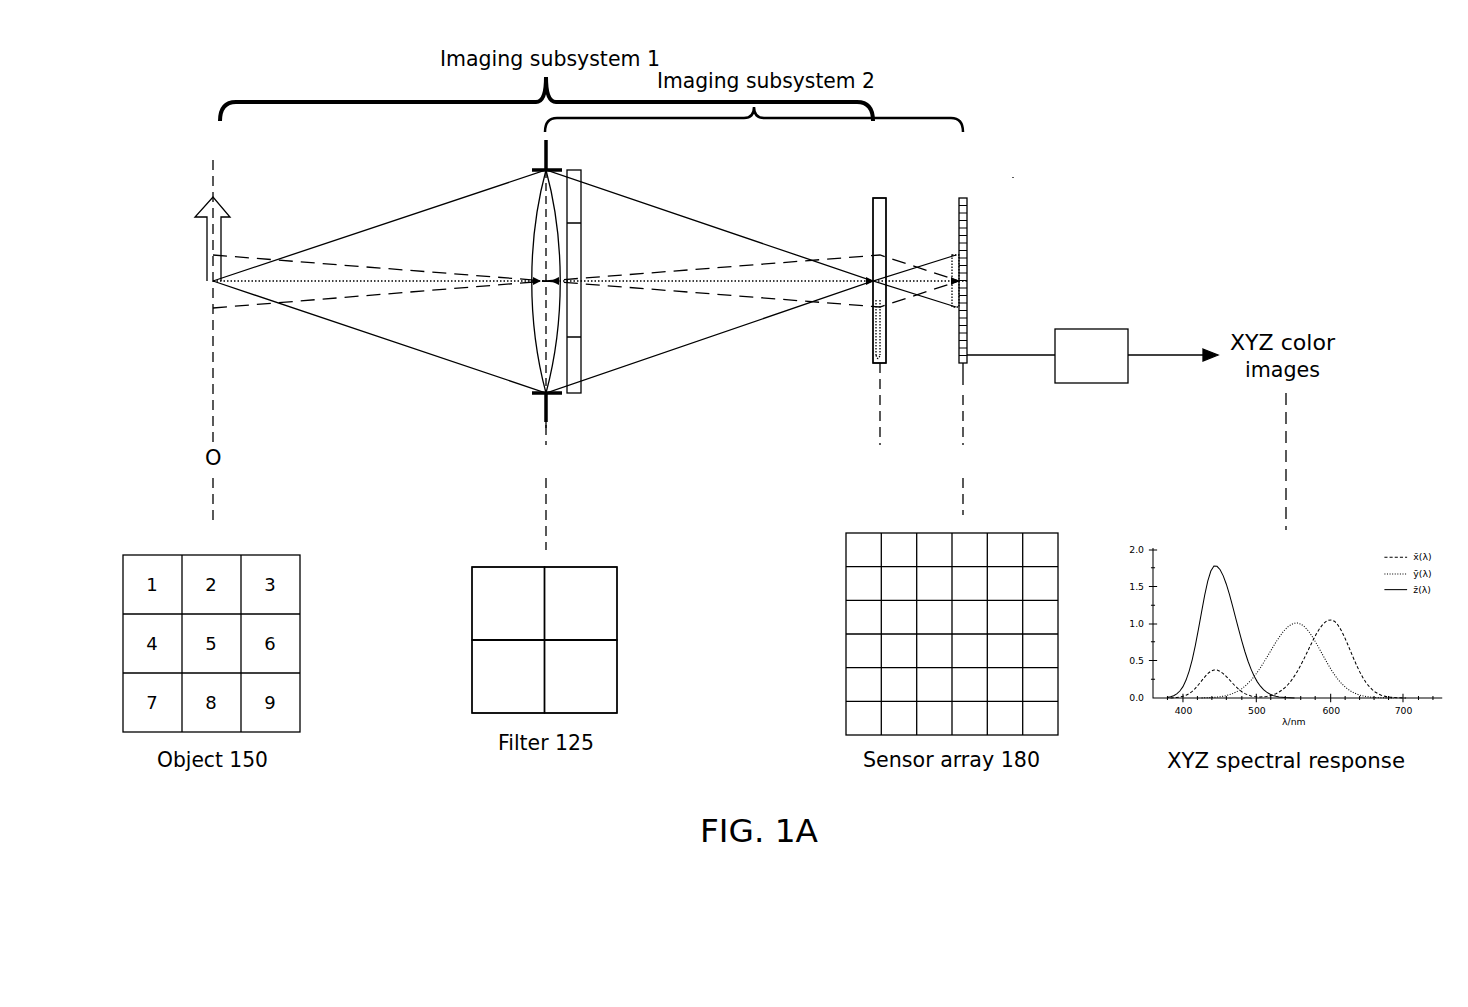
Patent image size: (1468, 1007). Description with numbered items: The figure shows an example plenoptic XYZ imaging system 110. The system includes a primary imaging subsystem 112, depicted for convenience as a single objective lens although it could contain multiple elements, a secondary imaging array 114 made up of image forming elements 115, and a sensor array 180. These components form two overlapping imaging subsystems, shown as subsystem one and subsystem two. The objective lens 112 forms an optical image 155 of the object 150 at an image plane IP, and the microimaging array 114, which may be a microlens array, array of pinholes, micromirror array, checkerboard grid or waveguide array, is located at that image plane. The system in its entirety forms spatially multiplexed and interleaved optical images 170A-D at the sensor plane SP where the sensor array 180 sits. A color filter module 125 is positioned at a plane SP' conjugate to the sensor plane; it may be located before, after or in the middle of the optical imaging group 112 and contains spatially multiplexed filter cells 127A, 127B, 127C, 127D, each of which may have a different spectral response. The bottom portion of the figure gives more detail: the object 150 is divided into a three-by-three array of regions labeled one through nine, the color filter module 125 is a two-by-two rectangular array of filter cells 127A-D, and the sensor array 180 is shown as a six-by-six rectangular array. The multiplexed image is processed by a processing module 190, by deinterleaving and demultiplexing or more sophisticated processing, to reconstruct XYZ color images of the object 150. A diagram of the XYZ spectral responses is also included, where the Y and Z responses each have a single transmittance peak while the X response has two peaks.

The plenoptic XYZ imaging system 110 is at (1013, 177).
The primary imaging subsystem 112 is at (535, 202).
The secondary imaging array 114 is at (898, 196).
The image forming elements 115 is at (873, 233).
The color filter module 125 is at (587, 202).
The filter cell 127A is at (508, 603).
The filter cell 127B is at (581, 603).
The filter cell 127C is at (508, 676).
The filter cell 127D is at (581, 676).
The object 150 is at (229, 214).
The optical image 155 is at (865, 340).
The spatially multiplexed and interleaved optical images 170A-D is at (952, 258).
The sensor array 180 is at (968, 224).
The processing module 190 is at (1092, 356).